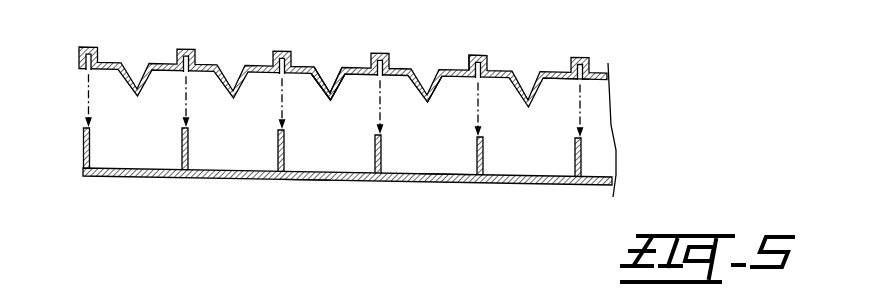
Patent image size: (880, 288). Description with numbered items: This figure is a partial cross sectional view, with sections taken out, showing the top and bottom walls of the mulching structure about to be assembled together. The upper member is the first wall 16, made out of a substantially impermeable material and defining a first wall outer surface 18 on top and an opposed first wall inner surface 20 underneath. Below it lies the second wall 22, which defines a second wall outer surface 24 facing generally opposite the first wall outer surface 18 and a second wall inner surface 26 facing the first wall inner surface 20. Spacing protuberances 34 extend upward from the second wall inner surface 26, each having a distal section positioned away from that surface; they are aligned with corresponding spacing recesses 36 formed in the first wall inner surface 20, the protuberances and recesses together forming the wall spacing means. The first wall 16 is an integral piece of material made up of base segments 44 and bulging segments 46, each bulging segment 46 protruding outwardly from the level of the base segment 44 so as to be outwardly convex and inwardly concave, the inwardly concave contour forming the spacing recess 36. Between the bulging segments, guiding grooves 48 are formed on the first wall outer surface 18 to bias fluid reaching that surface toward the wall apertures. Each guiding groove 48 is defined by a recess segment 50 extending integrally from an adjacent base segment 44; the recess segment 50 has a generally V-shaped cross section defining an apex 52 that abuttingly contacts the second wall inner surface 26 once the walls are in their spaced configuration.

The first wall 16 is at (618, 73).
The first wall outer surface 18 is at (549, 67).
The first wall inner surface 20 is at (555, 85).
The second wall 22 is at (522, 181).
The second wall outer surface 24 is at (302, 188).
The second wall inner surface 26 is at (447, 170).
The spacing protuberance 34 is at (196, 148).
The spacing recess 36 is at (189, 79).
The base segment 44 is at (447, 77).
The bulging segment 46 is at (481, 62).
The guiding groove 48 is at (335, 68).
The recess segment 50 is at (322, 85).
The apex 52 is at (337, 94).